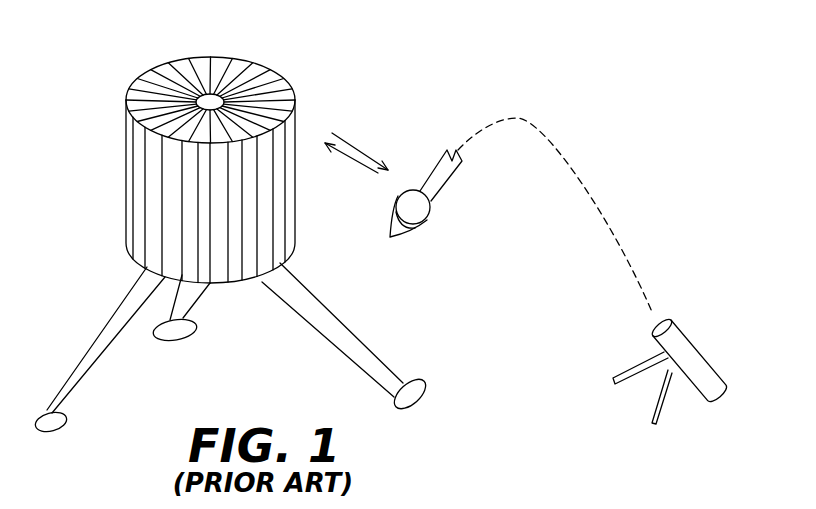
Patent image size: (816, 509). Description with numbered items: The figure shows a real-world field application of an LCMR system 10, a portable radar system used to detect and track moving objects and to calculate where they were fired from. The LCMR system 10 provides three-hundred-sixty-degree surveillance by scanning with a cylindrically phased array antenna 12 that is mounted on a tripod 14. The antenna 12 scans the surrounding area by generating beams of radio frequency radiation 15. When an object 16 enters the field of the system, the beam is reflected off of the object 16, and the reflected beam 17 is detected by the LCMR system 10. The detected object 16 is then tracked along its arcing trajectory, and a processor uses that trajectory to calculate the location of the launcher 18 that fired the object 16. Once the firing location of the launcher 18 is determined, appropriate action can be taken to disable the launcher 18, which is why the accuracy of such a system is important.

The LCMR system 10 is at (128, 38).
The cylindrically phased array antenna 12 is at (122, 158).
The tripod 14 is at (102, 330).
The beams of radio frequency radiation 15 is at (355, 145).
The object 16 is at (448, 180).
The reflected beam 17 is at (350, 160).
The launcher 18 is at (695, 338).